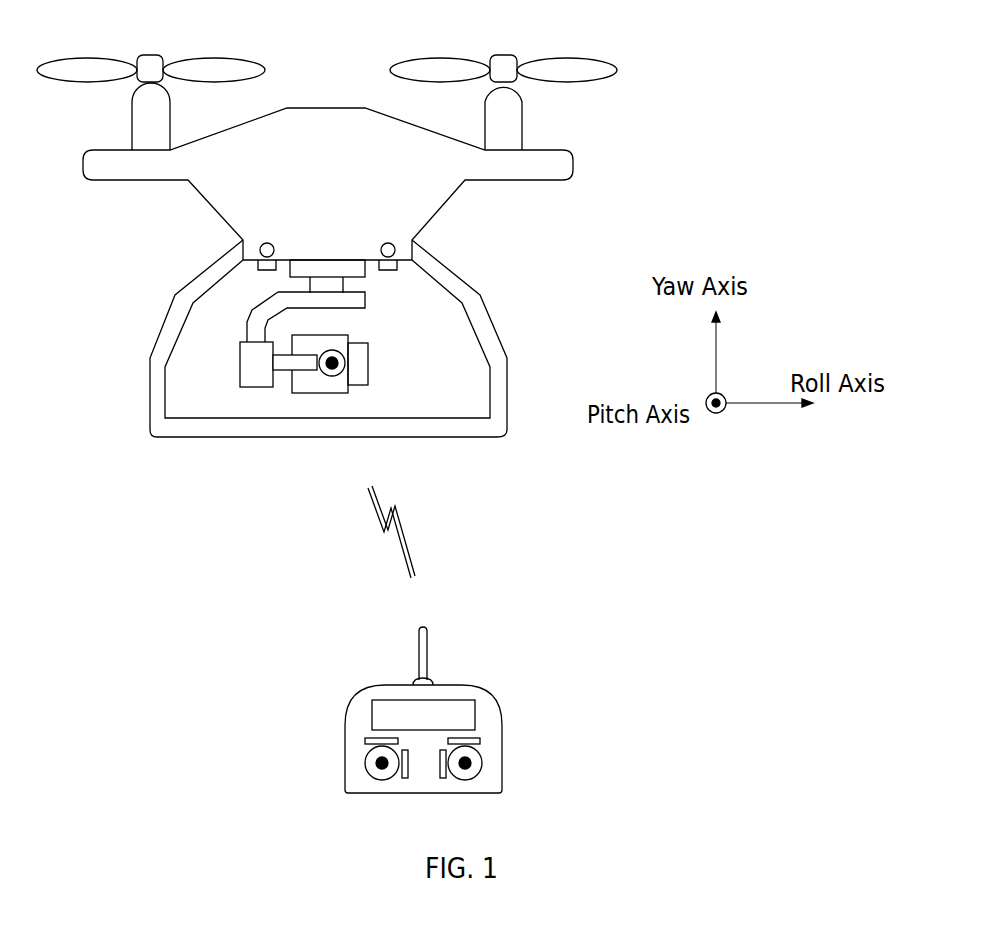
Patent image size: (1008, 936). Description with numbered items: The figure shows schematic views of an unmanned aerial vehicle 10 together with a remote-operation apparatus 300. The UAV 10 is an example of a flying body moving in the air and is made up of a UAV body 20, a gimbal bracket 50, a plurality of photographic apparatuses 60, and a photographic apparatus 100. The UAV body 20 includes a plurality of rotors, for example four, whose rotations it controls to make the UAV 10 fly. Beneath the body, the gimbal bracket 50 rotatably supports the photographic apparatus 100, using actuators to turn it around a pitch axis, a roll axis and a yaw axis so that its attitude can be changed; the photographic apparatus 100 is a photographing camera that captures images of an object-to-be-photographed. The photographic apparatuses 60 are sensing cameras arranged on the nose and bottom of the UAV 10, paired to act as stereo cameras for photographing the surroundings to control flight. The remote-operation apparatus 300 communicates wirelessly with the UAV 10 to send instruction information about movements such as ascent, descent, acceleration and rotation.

The unmanned aerial vehicle 10 is at (392, 259).
The UAV body 20 is at (332, 120).
The gimbal bracket 50 is at (194, 282).
The photographic apparatuses 60 is at (259, 252).
The photographic apparatus 100 is at (313, 395).
The remote-operation apparatus 300 is at (502, 755).